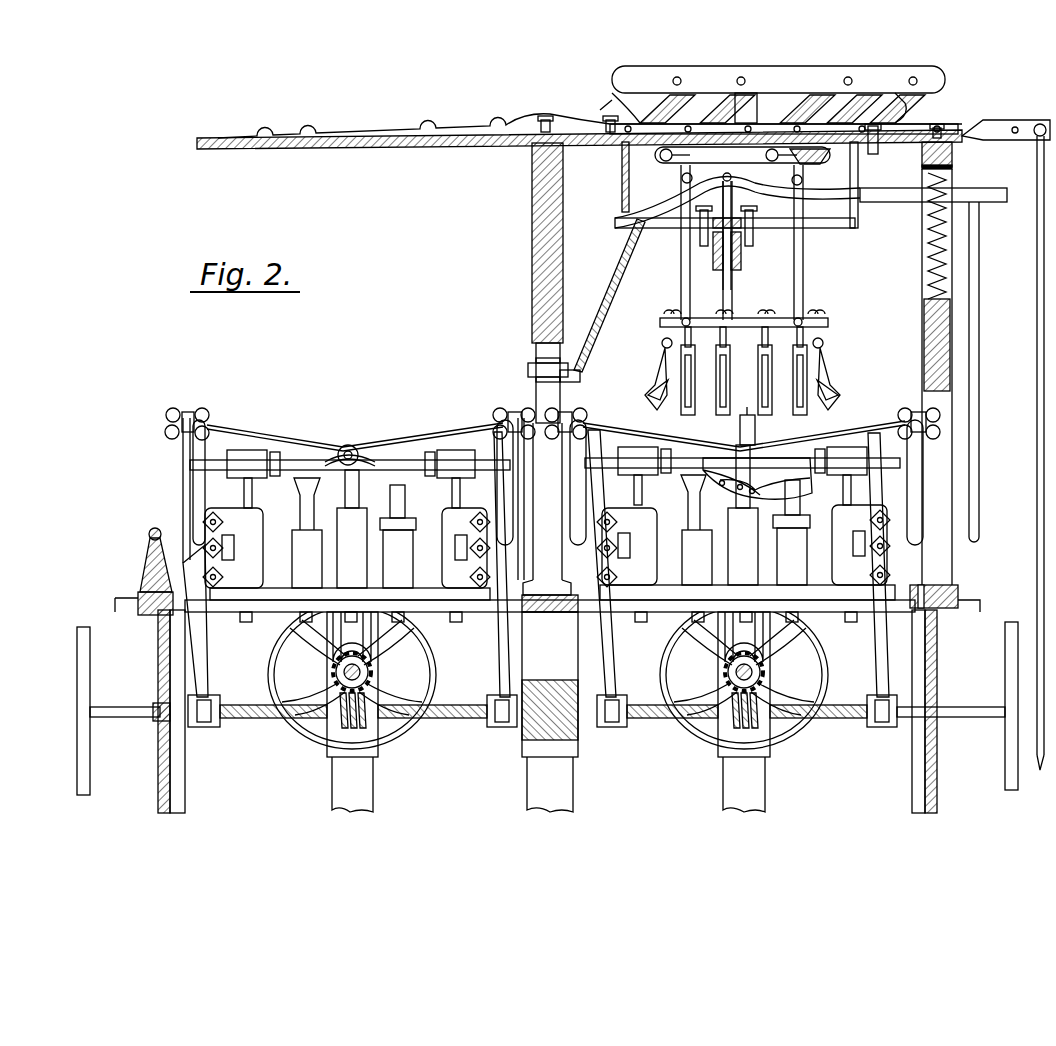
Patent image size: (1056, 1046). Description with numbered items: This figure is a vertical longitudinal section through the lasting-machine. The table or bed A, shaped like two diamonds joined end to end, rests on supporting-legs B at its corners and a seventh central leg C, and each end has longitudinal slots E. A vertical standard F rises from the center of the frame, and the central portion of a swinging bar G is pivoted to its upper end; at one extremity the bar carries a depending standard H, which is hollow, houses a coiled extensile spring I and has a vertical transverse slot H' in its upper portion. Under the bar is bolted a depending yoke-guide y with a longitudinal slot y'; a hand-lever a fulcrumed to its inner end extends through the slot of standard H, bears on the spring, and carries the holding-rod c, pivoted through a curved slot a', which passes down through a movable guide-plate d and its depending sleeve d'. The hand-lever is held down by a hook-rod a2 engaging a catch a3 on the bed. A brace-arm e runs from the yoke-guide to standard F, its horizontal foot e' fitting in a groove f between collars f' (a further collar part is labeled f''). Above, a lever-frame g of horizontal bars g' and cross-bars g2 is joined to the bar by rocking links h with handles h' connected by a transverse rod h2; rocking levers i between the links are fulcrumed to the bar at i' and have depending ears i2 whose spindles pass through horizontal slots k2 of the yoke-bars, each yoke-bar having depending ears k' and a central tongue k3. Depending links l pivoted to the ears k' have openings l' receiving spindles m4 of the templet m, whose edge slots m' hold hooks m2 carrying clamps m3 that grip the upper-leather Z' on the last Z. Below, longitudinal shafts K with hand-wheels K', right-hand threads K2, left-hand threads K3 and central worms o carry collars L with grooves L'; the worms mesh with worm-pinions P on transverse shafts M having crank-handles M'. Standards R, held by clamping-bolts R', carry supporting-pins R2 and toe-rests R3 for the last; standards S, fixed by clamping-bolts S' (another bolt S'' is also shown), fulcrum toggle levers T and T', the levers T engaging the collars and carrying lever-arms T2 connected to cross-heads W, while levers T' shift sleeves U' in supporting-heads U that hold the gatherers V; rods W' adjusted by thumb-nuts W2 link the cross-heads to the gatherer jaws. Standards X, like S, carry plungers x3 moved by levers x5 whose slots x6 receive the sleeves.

The swinging bar G is at (480, 145).
The vertical standard F is at (532, 300).
The groove f is at (515, 381).
The collars f' is at (523, 367).
The collar ring f'' is at (530, 363).
The brace-arm e is at (609, 295).
The horizontal foot e' is at (580, 375).
The lever-frame g is at (767, 81).
The horizontal bars g' is at (778, 79).
The connecting-rods or cross-bars g2 is at (680, 78).
The tongue or arm k3 is at (774, 45).
The rocking levers i is at (782, 109).
The rocking links h is at (765, 108).
The handles or levers h' is at (1006, 114).
The transverse rod h2 is at (1038, 124).
The fulcrum of rocking levers i' is at (784, 119).
The depending ears i2 is at (635, 178).
The horizontal slots k2 is at (830, 160).
The depending ears k' is at (737, 200).
The curved slot a' is at (743, 228).
The hand-lever a is at (938, 205).
The coiled extensile spring I is at (940, 205).
The yoke-guide y is at (751, 228).
The longitudinal slot y' is at (845, 250).
The movable guide-plate d is at (736, 238).
The depending sleeve d' is at (746, 246).
The holding rod or bar c is at (732, 280).
The depending rods or links l is at (738, 242).
The transverse opening l' is at (742, 307).
The templet m is at (762, 319).
The slots m' is at (744, 371).
The spindles m4 is at (730, 338).
The hooks m2 is at (662, 340).
The clamps m3 is at (746, 379).
The toggle-jointed levers x5 is at (754, 424).
The vertical slots x6 is at (745, 397).
The vertical transverse slot H' is at (924, 266).
The depending standard H is at (934, 388).
The depending hook-rod a2 is at (979, 398).
The catch a3 is at (980, 606).
The table or bed A is at (958, 592).
The cross-head W is at (552, 411).
The thumb-nuts W2 is at (170, 432).
The rods W' is at (556, 428).
The longitudinally-movable sleeves U' is at (545, 451).
The supporting-heads U is at (547, 477).
The gatherers V is at (300, 475).
The plungers x3 is at (365, 465).
The vertical standards S is at (546, 546).
The clamping-bolts S' is at (454, 591).
The standards R is at (549, 558).
The toe-rests R3 is at (300, 510).
The supporting-pins R2 is at (405, 505).
The standards X is at (547, 516).
The last Z is at (763, 481).
The upper-leather Z' is at (757, 473).
The lever-arms T2 is at (183, 500).
The toggle-jointed levers T' is at (558, 482).
The toggle-jointed levers T is at (552, 563).
The clamping-bolts R' is at (548, 625).
The longitudinal slots E is at (240, 612).
The bolt S'' is at (554, 629).
The shafts M is at (548, 675).
The hand-wheels or crank-handles M' is at (550, 671).
The worm-pinions P is at (340, 657).
The supporting-legs B is at (158, 775).
The central supporting-leg C is at (550, 703).
The worms o is at (352, 730).
The right-hand screw-threads K2 is at (250, 718).
The left-hand screw-threads K3 is at (470, 718).
The longitudinal horizontal shafts K is at (547, 702).
The hand-wheels or cranks K' is at (534, 708).
The grooves or recesses L' is at (542, 702).
The collars L is at (534, 741).